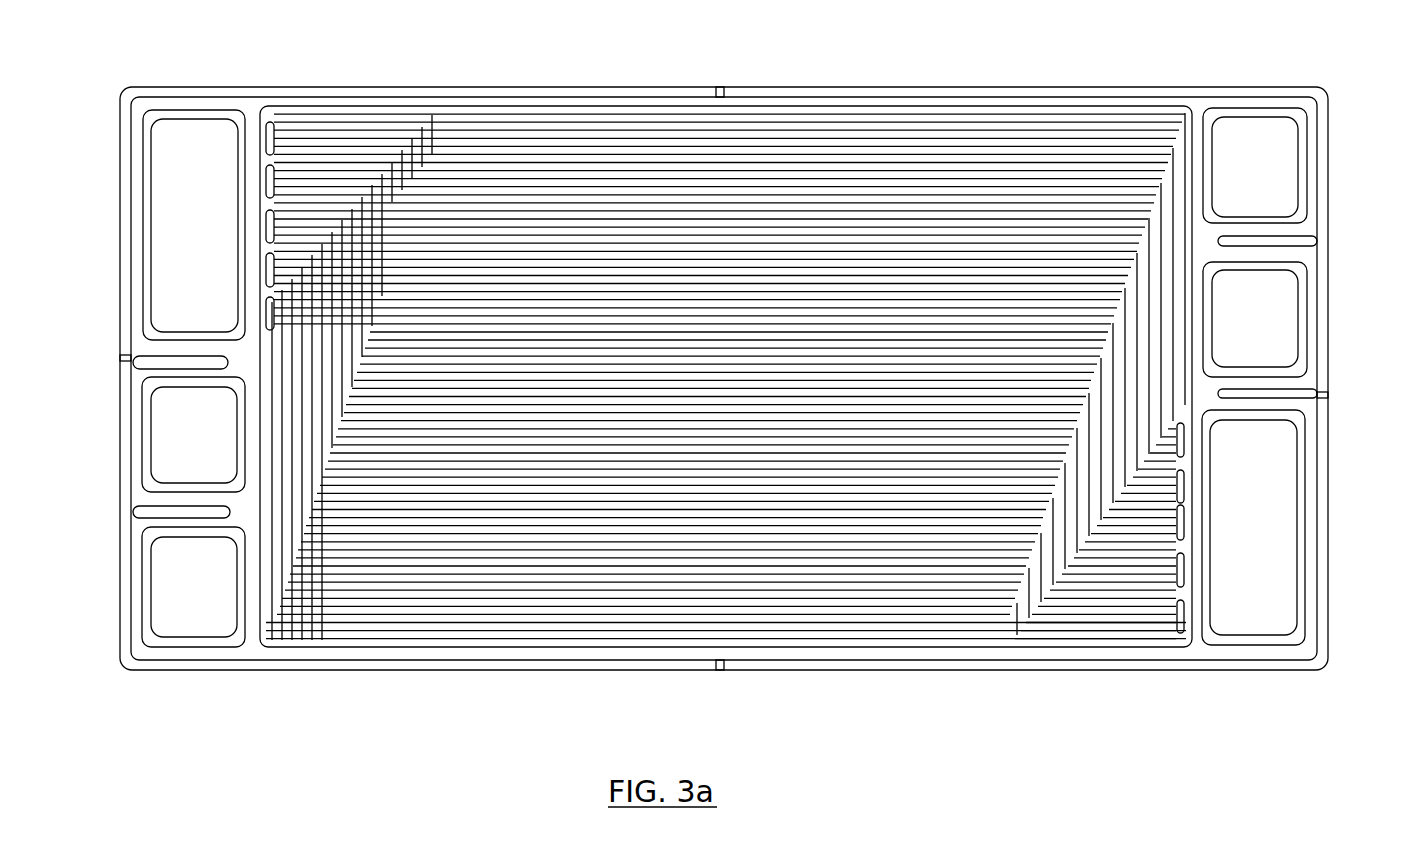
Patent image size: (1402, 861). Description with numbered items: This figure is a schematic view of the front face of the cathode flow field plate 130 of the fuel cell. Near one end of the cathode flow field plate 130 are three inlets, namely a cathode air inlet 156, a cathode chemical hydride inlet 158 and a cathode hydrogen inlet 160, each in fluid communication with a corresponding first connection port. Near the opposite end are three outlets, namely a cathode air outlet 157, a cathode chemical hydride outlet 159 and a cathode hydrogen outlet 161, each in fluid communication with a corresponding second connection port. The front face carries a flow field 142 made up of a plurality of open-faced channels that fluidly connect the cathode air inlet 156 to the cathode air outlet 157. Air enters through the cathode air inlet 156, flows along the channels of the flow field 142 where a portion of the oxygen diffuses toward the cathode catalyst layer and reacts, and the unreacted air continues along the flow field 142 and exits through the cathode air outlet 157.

The cathode flow field plate 130 is at (758, 697).
The flow field 142 is at (812, 165).
The cathode air inlet 156 is at (176, 221).
The cathode chemical hydride inlet 158 is at (183, 433).
The cathode hydrogen inlet 160 is at (157, 589).
The cathode hydrogen outlet 161 is at (1268, 181).
The cathode chemical hydride outlet 159 is at (1278, 326).
The cathode air outlet 157 is at (1263, 545).